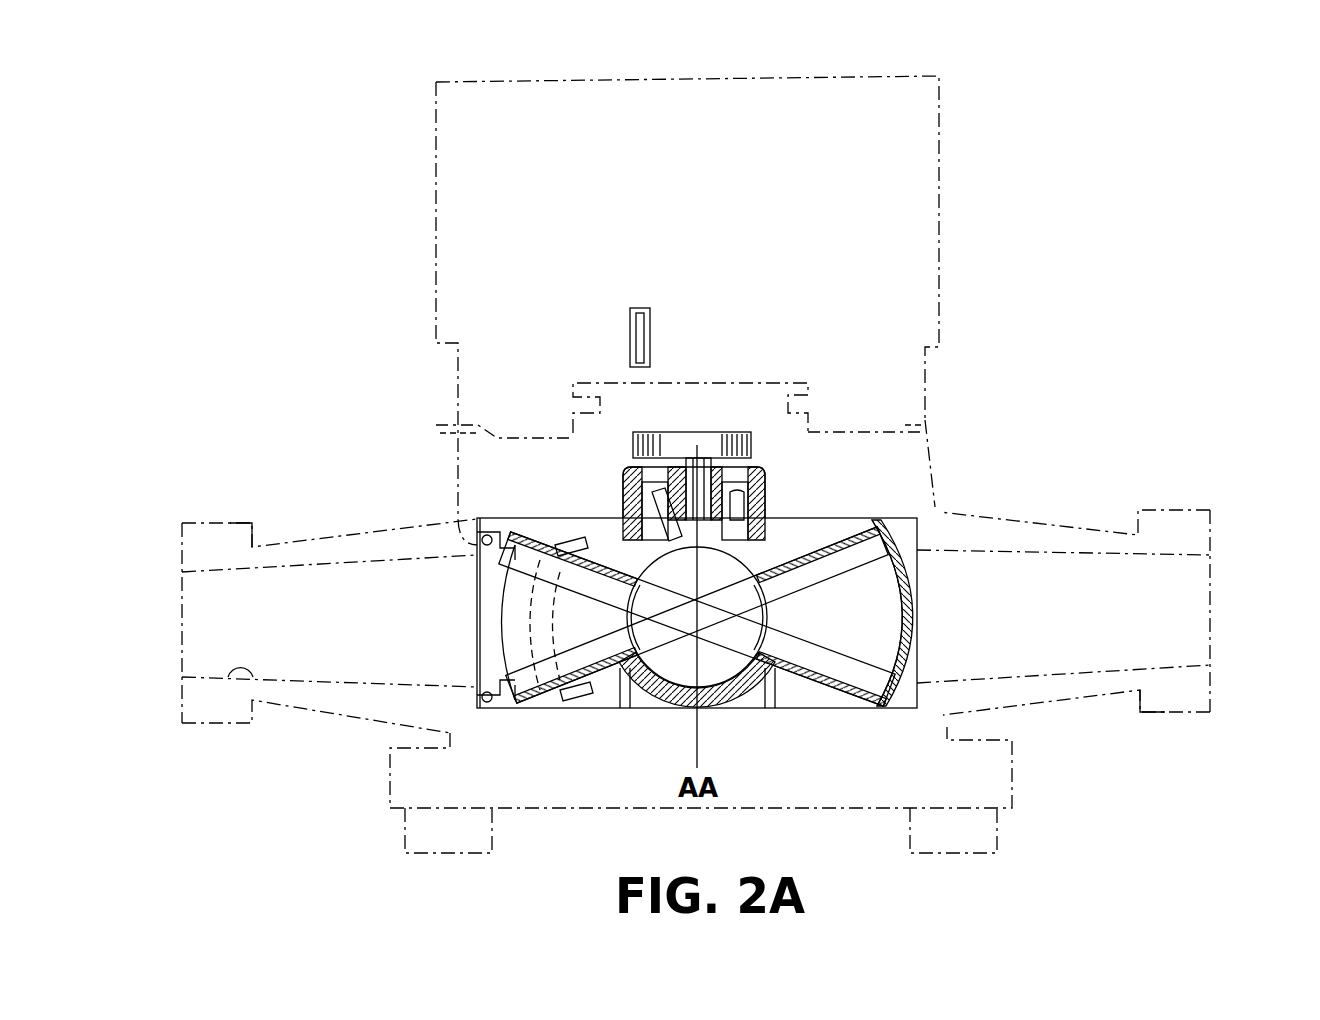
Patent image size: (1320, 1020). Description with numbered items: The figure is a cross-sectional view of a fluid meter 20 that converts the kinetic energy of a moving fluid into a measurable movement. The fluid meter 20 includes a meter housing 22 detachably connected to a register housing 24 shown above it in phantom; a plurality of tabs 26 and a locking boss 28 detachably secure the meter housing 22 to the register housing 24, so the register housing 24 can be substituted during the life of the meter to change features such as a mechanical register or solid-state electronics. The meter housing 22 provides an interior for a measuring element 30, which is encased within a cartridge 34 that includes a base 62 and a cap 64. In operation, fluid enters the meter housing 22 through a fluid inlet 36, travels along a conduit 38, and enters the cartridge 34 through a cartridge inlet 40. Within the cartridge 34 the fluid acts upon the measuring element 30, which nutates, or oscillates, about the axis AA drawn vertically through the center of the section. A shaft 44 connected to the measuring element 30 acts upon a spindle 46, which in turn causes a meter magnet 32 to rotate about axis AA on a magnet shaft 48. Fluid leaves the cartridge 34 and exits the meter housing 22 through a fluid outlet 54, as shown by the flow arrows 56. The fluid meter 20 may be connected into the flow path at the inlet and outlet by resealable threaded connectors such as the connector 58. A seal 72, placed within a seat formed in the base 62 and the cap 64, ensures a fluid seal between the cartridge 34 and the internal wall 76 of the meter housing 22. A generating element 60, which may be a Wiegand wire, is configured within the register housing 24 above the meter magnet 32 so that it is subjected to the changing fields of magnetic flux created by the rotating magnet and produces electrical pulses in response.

The fluid meter 20 is at (1050, 304).
The meter housing 22 is at (392, 775).
The register housing 24 is at (940, 155).
The tabs 26 is at (458, 433).
The locking boss 28 is at (814, 378).
The measuring element 30 is at (803, 573).
The meter magnet 32 is at (695, 442).
The cartridge 34 is at (513, 706).
The fluid inlet 36 is at (178, 626).
The conduit 38 is at (237, 682).
The cartridge inlet 40 is at (466, 640).
The shaft 44 is at (622, 496).
The spindle 46 is at (785, 522).
The magnet shaft 48 is at (700, 456).
The fluid outlet 54 is at (1220, 592).
The flow arrows 56 is at (215, 520).
The threaded connector 58 is at (1165, 715).
The generating element 60 is at (655, 340).
The base 62 is at (905, 630).
The cap 64 is at (913, 540).
The seal 72 is at (480, 537).
The internal wall 76 is at (586, 522).